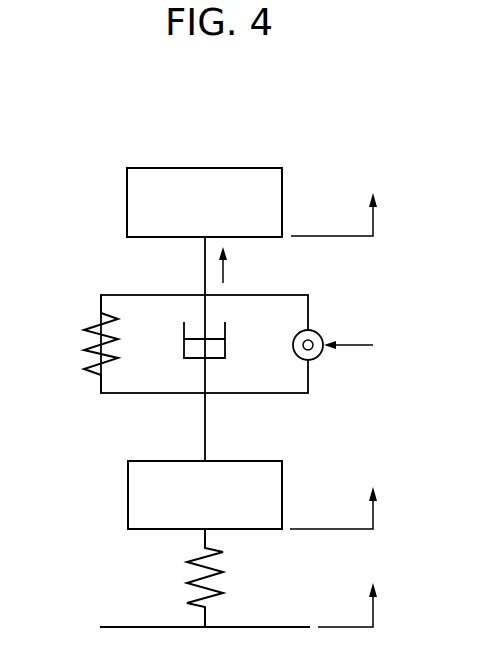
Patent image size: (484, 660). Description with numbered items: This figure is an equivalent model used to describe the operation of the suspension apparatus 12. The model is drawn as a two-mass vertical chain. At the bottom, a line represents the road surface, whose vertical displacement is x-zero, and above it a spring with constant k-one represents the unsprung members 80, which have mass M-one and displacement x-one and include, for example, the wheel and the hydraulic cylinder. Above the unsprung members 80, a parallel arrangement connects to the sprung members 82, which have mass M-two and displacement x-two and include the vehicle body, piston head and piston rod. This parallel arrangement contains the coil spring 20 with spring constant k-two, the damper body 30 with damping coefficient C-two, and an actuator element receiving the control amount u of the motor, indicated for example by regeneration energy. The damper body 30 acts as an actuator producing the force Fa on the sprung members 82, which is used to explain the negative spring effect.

The suspension apparatus 12 is at (305, 100).
The sprung members 82 is at (137, 182).
The coil spring 20 is at (88, 340).
The damper body 30 is at (220, 348).
The unsprung members 80 is at (137, 475).